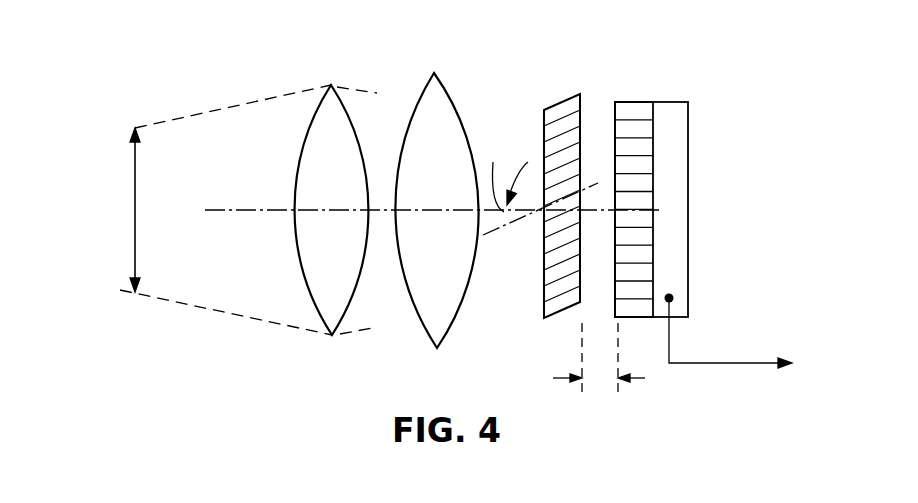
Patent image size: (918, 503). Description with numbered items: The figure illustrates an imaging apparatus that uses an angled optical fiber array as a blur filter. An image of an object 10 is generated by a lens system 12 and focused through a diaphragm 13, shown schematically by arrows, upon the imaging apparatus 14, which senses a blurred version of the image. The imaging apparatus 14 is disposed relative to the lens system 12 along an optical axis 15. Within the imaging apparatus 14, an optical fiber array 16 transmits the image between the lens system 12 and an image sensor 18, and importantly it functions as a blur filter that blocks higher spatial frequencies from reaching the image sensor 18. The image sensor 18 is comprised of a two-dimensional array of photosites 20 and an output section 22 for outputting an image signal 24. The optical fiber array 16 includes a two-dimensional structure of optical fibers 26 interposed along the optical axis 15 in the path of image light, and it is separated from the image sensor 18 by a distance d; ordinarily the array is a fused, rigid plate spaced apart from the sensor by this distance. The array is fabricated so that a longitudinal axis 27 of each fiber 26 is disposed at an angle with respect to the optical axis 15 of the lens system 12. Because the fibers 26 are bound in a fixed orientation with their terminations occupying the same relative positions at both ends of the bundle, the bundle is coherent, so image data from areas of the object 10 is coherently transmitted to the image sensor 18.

The object 10 is at (133, 207).
The lens system 12 is at (423, 38).
The diaphragm 13 is at (377, 116).
The imaging apparatus 14 is at (598, 50).
The optical axis 15 is at (262, 210).
The optical fiber array 16 is at (538, 217).
The image sensor 18 is at (682, 190).
The photosites 20 is at (623, 108).
The output section 22 is at (672, 296).
The image signal 24 is at (749, 338).
The optical fibers 26 is at (553, 275).
The longitudinal axis 27 is at (493, 231).